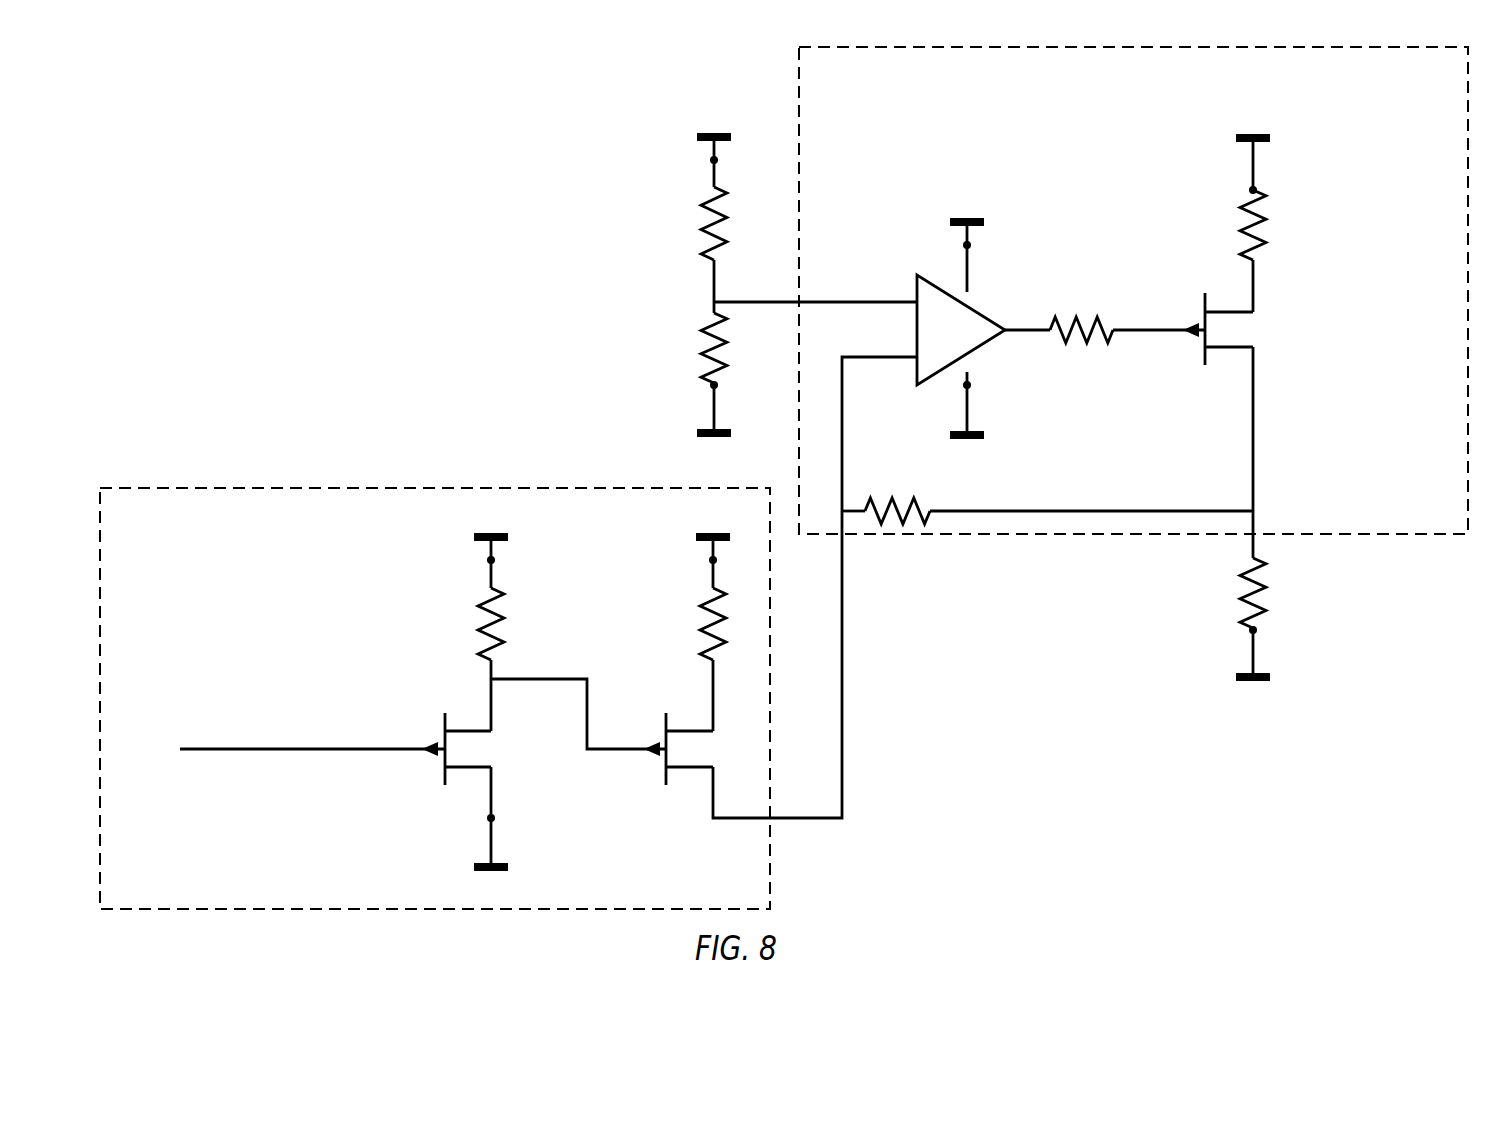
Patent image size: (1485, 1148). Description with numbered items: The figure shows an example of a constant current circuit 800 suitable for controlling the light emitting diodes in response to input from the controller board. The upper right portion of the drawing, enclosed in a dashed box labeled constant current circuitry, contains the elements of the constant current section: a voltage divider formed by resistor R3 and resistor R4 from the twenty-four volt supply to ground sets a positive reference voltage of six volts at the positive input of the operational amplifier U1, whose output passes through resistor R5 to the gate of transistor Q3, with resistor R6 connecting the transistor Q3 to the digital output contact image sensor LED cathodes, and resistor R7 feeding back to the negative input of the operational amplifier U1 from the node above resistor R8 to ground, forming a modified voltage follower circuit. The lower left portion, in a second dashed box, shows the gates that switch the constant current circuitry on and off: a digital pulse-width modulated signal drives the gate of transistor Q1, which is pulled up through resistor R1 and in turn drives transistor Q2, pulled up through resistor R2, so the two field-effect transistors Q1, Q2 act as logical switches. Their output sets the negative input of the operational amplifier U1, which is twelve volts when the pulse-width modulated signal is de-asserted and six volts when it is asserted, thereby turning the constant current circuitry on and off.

The constant current circuit 800 is at (296, 161).
The resistor R1 is at (508, 624).
The resistor R2 is at (731, 624).
The resistor R3 is at (731, 223).
The resistor R4 is at (731, 348).
The resistor R5 is at (1081, 314).
The resistor R6 is at (1271, 225).
The resistor R7 is at (897, 496).
The resistor R8 is at (1271, 593).
The gate switch transistor Q1 is at (481, 749).
The gate switch transistor Q2 is at (703, 749).
The constant current transistor Q3 is at (1251, 329).
The operational amplifier U1 is at (964, 343).